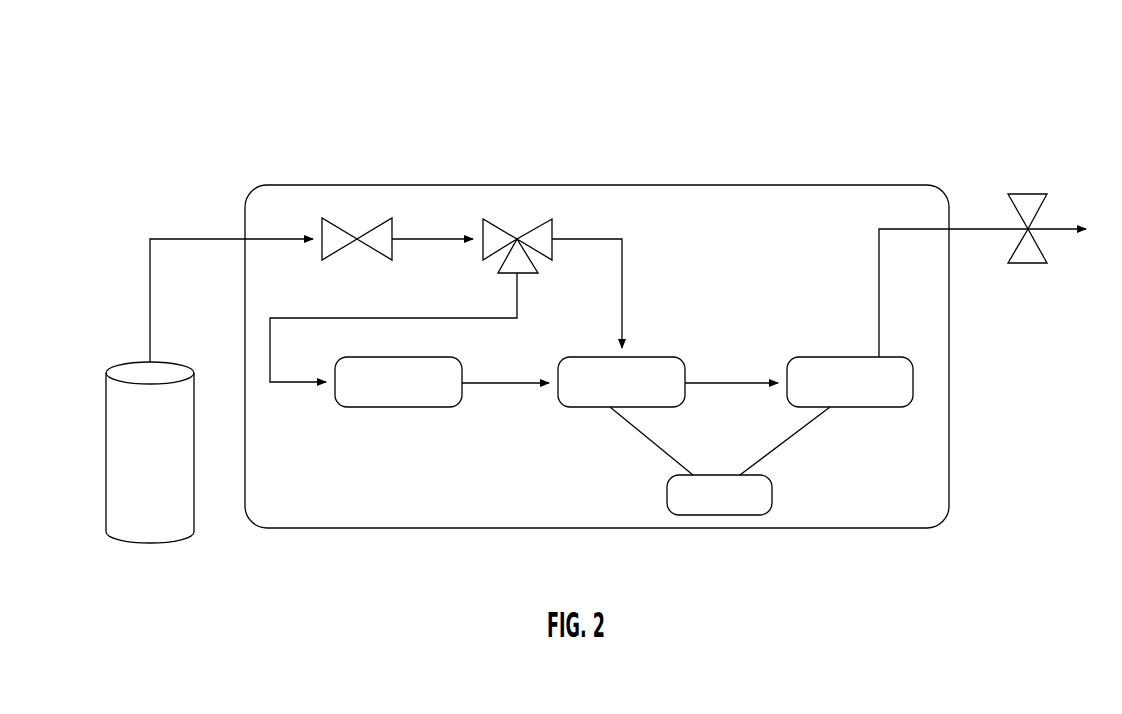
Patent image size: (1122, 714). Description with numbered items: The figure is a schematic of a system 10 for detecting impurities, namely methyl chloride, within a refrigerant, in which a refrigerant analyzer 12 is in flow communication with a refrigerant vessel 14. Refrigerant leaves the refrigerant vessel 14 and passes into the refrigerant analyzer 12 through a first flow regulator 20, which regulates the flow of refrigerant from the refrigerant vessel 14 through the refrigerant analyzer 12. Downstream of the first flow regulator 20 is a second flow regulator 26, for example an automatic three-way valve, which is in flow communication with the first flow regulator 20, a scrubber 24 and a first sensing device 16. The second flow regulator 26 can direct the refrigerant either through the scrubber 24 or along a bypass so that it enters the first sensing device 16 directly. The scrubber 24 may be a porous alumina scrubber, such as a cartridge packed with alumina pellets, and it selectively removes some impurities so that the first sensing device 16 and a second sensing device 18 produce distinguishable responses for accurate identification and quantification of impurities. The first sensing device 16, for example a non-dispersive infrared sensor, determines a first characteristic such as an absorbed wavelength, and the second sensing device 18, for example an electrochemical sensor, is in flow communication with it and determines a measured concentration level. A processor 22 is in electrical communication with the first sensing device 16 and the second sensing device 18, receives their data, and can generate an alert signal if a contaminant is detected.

The system 10 is at (306, 140).
The refrigerant analyzer 12 is at (949, 435).
The refrigerant vessel 14 is at (194, 453).
The first sensing device 16 is at (583, 407).
The second sensing device 18 is at (888, 407).
The first flow regulator 20 is at (370, 259).
The processor 22 is at (772, 492).
The scrubber 24 is at (398, 407).
The second flow regulator 26 is at (546, 259).